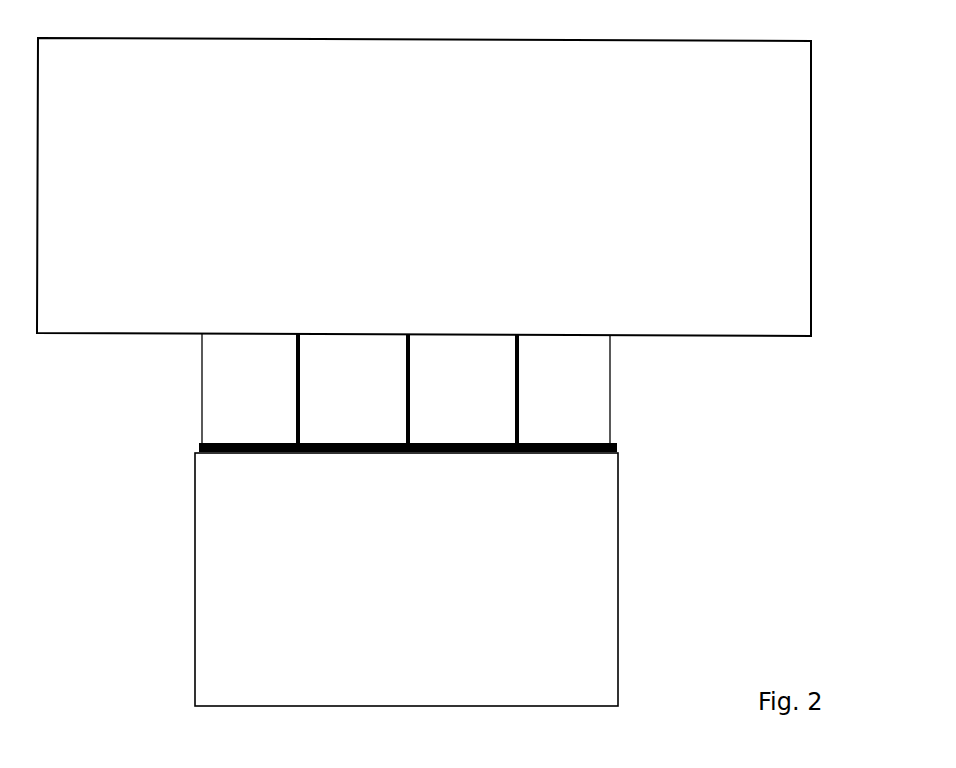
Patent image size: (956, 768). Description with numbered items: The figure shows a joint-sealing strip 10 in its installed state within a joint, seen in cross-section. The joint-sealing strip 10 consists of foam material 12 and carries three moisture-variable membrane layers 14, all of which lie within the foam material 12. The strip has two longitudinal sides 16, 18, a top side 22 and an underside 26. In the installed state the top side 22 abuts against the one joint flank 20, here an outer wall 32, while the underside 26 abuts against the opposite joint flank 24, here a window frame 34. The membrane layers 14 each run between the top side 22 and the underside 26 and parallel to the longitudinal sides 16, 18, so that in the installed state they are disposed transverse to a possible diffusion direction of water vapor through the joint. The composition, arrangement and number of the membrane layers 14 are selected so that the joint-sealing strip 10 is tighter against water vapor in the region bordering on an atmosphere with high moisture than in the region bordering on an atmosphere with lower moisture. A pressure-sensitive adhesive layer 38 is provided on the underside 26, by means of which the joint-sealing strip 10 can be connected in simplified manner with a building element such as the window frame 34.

The joint-sealing strip 10 is at (123, 423).
The foam material 12 is at (244, 400).
The moisture-variable membrane layers 14 is at (408, 370).
The longitudinal side 16 is at (192, 403).
The longitudinal side 18 is at (619, 372).
The joint flank 20 is at (240, 333).
The top side 22 is at (442, 324).
The opposite joint flank 24 is at (617, 450).
The underside 26 is at (441, 463).
The outer wall 32 is at (416, 200).
The window frame 34 is at (370, 556).
The pressure-sensitive adhesive layer 38 is at (275, 453).